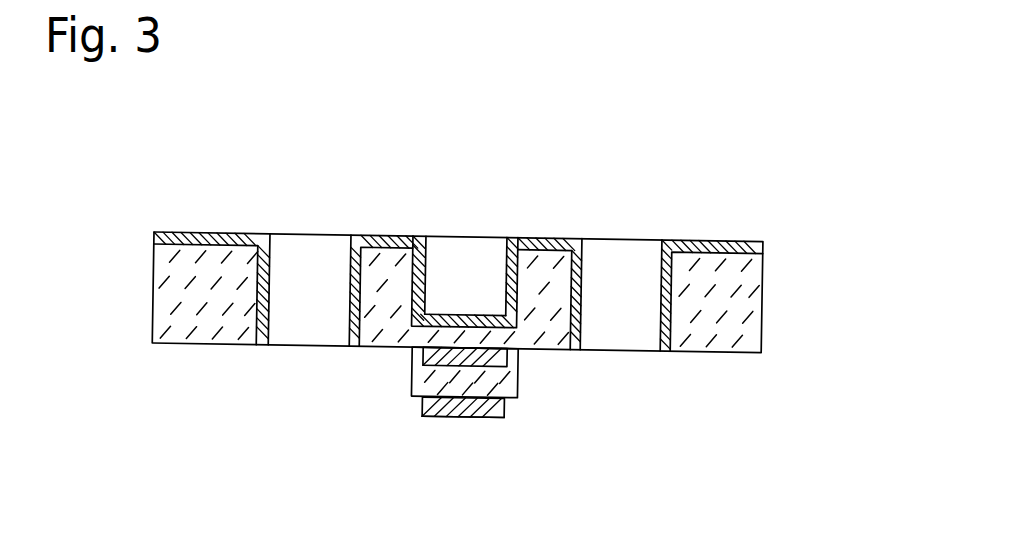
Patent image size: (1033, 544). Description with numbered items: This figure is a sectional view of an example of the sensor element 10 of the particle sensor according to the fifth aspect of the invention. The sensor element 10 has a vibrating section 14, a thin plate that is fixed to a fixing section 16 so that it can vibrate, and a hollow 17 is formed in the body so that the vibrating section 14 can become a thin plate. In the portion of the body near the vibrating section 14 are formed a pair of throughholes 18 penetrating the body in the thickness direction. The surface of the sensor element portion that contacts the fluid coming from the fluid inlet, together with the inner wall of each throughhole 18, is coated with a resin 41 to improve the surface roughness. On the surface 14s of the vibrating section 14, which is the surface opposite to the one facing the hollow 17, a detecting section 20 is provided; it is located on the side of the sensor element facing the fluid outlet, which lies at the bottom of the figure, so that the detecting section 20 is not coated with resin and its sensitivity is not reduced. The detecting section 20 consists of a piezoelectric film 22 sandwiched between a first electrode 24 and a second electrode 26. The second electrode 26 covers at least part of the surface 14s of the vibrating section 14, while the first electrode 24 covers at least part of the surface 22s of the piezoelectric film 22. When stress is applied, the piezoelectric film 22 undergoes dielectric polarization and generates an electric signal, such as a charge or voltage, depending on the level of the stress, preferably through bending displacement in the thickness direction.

The circuit board 10 is at (792, 311).
The vibrating section 14 is at (470, 347).
The surface of the vibrating section 14s is at (450, 347).
The fixing section 16 is at (388, 330).
The hollow 17 is at (505, 282).
The throughholes 18 is at (662, 299).
The detecting section 20 is at (560, 429).
The piezoelectric film 22 is at (512, 402).
The surface of the piezoelectric film 22s is at (462, 417).
The first electrode 24 is at (505, 415).
The second electrode 26 is at (510, 362).
The resin 41 is at (375, 234).